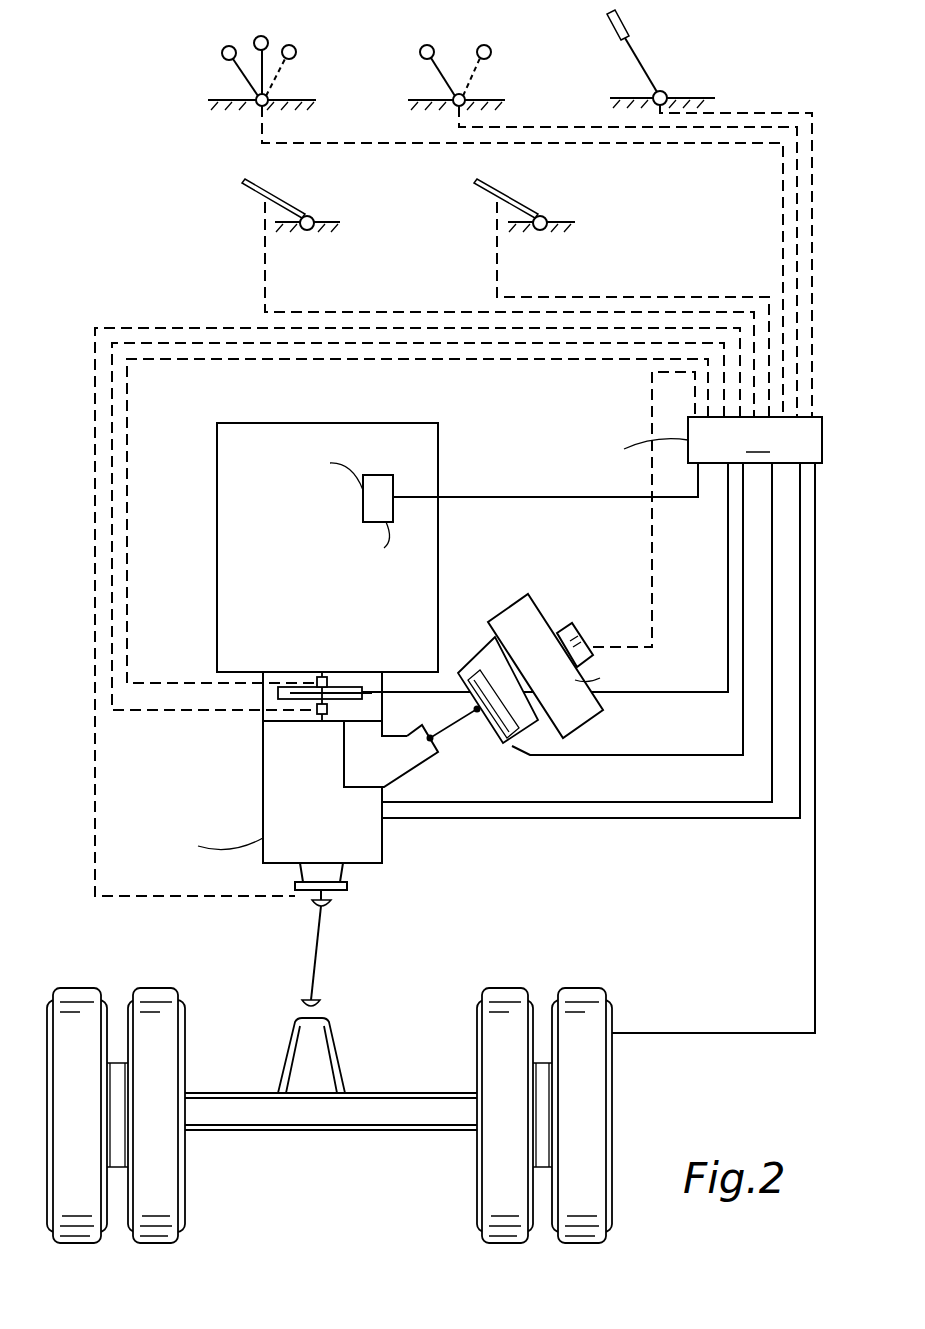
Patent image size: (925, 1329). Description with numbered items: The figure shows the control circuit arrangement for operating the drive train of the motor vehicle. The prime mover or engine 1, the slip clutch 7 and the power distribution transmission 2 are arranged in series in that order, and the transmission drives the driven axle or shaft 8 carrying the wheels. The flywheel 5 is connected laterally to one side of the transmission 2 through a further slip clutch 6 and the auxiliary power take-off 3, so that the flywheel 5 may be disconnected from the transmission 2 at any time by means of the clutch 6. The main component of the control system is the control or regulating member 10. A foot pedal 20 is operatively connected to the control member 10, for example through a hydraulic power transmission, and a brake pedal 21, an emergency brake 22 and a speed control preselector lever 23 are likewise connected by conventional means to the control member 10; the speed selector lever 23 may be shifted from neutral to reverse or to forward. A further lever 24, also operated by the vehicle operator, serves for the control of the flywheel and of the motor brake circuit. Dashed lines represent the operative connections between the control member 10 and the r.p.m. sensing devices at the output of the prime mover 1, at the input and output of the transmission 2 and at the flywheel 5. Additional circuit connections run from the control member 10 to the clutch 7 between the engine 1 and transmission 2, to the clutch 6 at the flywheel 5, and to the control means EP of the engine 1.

The engine 1 is at (332, 630).
The power distribution transmission 2 is at (322, 828).
The auxiliary power take-off 3 is at (424, 753).
The flywheel 5 is at (540, 622).
The slip clutch 6 is at (500, 733).
The slip clutch 7 is at (300, 699).
The driven axle 8 is at (368, 1093).
The control member 10 is at (458, 680).
The foot pedal 20 is at (282, 204).
The brake pedal 21 is at (514, 204).
The emergency brake 22 is at (650, 72).
The speed control preselector lever 23 is at (264, 68).
The lever 24 is at (447, 78).